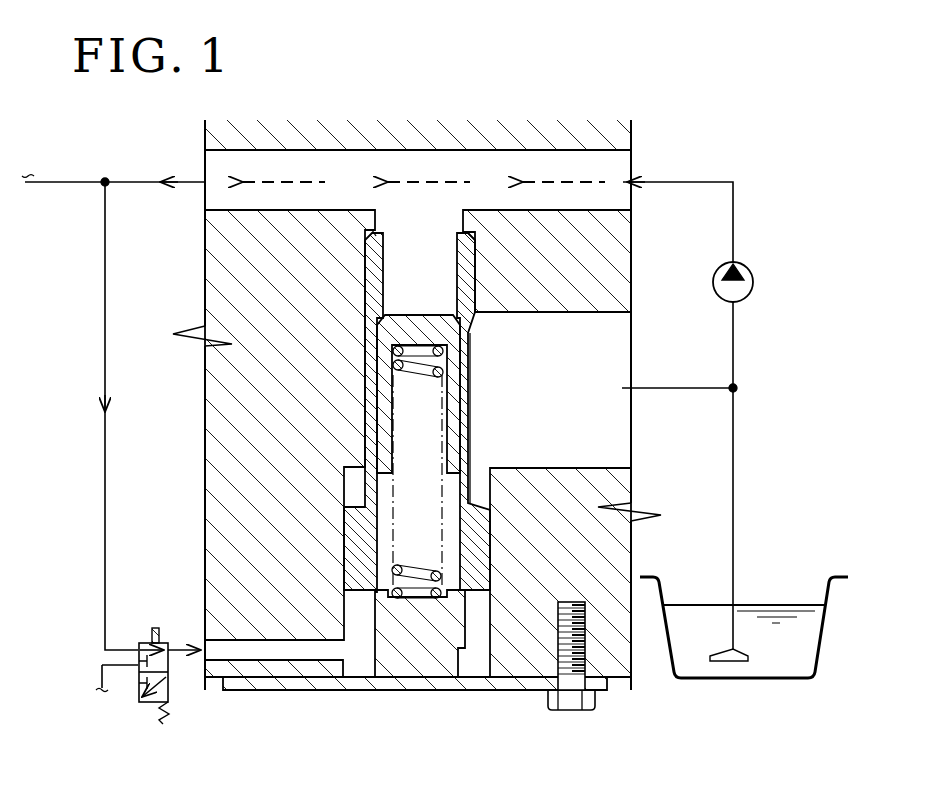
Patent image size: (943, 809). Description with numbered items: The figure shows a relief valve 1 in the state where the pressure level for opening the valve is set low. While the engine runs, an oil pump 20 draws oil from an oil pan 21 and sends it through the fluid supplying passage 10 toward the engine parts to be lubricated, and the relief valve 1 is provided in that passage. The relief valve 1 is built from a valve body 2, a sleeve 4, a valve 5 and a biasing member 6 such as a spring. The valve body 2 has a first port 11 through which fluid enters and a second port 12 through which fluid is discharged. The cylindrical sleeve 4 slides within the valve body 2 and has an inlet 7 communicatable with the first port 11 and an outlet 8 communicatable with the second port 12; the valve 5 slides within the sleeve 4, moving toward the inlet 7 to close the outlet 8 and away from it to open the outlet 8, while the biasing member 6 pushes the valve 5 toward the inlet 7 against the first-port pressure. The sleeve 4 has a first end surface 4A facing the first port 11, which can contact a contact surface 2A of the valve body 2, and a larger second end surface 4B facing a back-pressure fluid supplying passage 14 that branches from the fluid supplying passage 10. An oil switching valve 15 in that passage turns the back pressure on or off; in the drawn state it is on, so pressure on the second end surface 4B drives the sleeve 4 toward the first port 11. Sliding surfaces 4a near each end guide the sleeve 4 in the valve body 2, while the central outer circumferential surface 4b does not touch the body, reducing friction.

The relief valve 1 is at (195, 276).
The valve body 2 is at (213, 427).
The contact surface 2A is at (363, 253).
The sleeve 4 is at (363, 278).
The first end surface 4A is at (408, 273).
The second end surface 4B is at (367, 593).
The sliding surfaces 4a is at (473, 300).
The outer and central circumferential surface 4b is at (372, 352).
The valve 5 is at (377, 412).
The biasing member 6 is at (455, 578).
The inlet 7 is at (480, 280).
The outlet 8 is at (466, 370).
The fluid supplying passage 10 is at (300, 196).
The first port 11 is at (433, 224).
The second port 12 is at (565, 397).
The back-pressure fluid supplying passage 14 is at (102, 528).
The oil switching valve (OSV) 15 is at (152, 628).
The oil pump 20 is at (755, 278).
The oil pan 21 is at (765, 590).